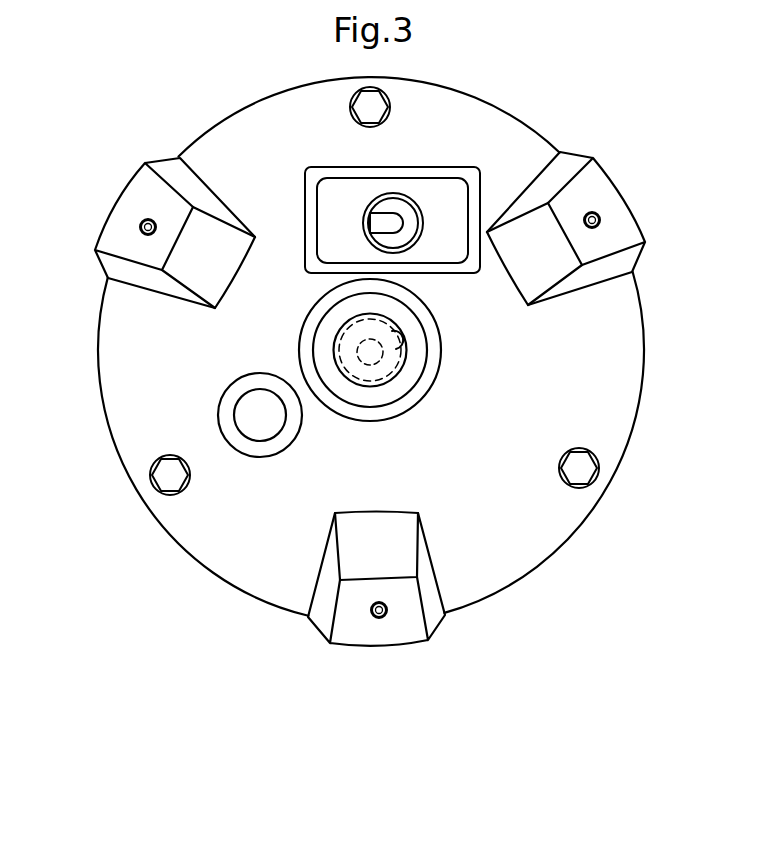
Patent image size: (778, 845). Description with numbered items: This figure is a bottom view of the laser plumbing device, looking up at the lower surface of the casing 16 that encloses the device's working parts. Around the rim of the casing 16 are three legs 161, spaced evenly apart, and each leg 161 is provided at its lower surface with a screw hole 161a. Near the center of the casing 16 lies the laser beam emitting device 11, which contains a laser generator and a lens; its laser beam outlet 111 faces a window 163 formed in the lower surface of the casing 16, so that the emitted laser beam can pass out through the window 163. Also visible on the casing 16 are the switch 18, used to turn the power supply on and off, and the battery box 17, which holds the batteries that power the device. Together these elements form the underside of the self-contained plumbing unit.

The casing 16 is at (242, 109).
The leg 161 is at (138, 188).
The screw hole 161a is at (141, 224).
The switch 18 is at (383, 218).
The laser beam emitting device 11 is at (397, 362).
The laser beam outlet 111 is at (373, 357).
The window 163 is at (400, 348).
The battery box 17 is at (257, 433).